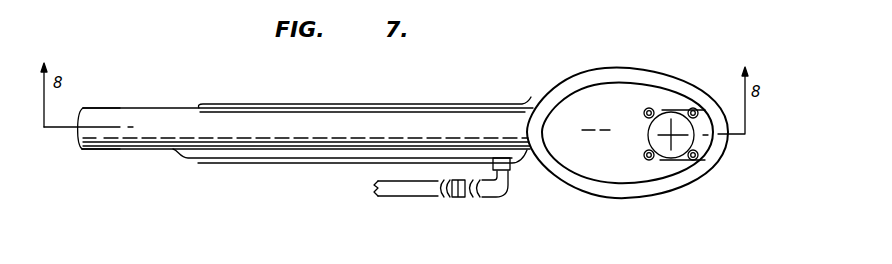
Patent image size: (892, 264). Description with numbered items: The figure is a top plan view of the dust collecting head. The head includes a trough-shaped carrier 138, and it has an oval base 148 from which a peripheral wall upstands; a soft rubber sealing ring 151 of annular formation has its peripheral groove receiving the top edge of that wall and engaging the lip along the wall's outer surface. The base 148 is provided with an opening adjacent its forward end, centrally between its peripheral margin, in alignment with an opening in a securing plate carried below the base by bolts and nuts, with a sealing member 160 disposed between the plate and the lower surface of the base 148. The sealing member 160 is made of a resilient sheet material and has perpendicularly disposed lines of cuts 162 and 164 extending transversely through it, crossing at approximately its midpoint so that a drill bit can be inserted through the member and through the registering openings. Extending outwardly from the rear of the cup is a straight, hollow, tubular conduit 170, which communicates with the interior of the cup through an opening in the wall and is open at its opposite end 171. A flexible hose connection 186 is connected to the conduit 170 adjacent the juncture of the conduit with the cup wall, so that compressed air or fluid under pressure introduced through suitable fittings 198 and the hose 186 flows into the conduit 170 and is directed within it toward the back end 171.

The trough-shaped carrier 138 is at (375, 107).
The open end of conduit 171 is at (104, 114).
The tubular conduit 170 is at (255, 117).
The soft rubber sealing ring 151 is at (586, 70).
The base 148 is at (598, 120).
The sealing member 160 is at (667, 110).
The line of cuts 162 is at (660, 135).
The line of cuts 164 is at (697, 146).
The flexible hose connection 186 is at (413, 198).
The fittings 198 is at (480, 200).